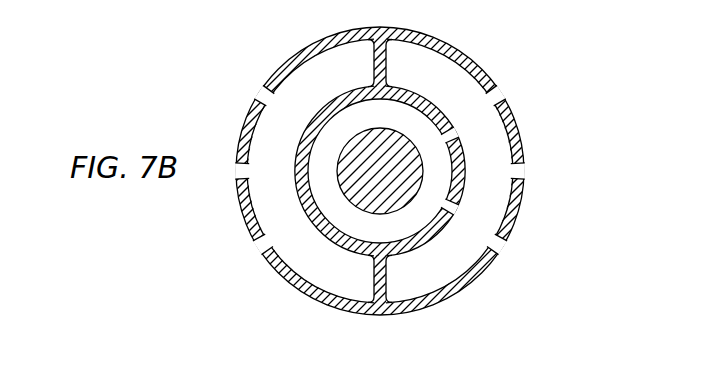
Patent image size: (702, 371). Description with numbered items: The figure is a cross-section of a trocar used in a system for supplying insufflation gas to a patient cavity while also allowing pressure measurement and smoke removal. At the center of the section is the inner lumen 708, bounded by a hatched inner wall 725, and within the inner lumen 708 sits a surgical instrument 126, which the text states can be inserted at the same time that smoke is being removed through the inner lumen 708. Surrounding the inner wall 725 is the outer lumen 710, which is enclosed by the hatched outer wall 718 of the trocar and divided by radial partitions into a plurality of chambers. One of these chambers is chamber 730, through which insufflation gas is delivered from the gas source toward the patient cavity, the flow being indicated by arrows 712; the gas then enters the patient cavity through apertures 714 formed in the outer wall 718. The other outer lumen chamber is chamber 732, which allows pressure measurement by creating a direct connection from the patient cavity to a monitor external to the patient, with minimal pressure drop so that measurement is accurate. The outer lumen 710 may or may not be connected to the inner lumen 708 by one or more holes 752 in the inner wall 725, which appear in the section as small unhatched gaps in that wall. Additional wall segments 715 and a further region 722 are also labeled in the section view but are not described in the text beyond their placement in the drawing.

The surgical instrument 126 is at (362, 182).
The inner lumen 708 is at (404, 117).
The outer lumen 710 is at (340, 65).
The arrows 712 is at (282, 123).
The apertures 714 is at (262, 247).
The lower-right wall segment 715 is at (496, 252).
The outer wall 718 is at (240, 213).
The right lumen 722 is at (490, 188).
The inner wall 725 is at (330, 99).
The chamber 730 is at (296, 240).
The outer chamber 732 is at (464, 240).
The holes 752 is at (453, 135).